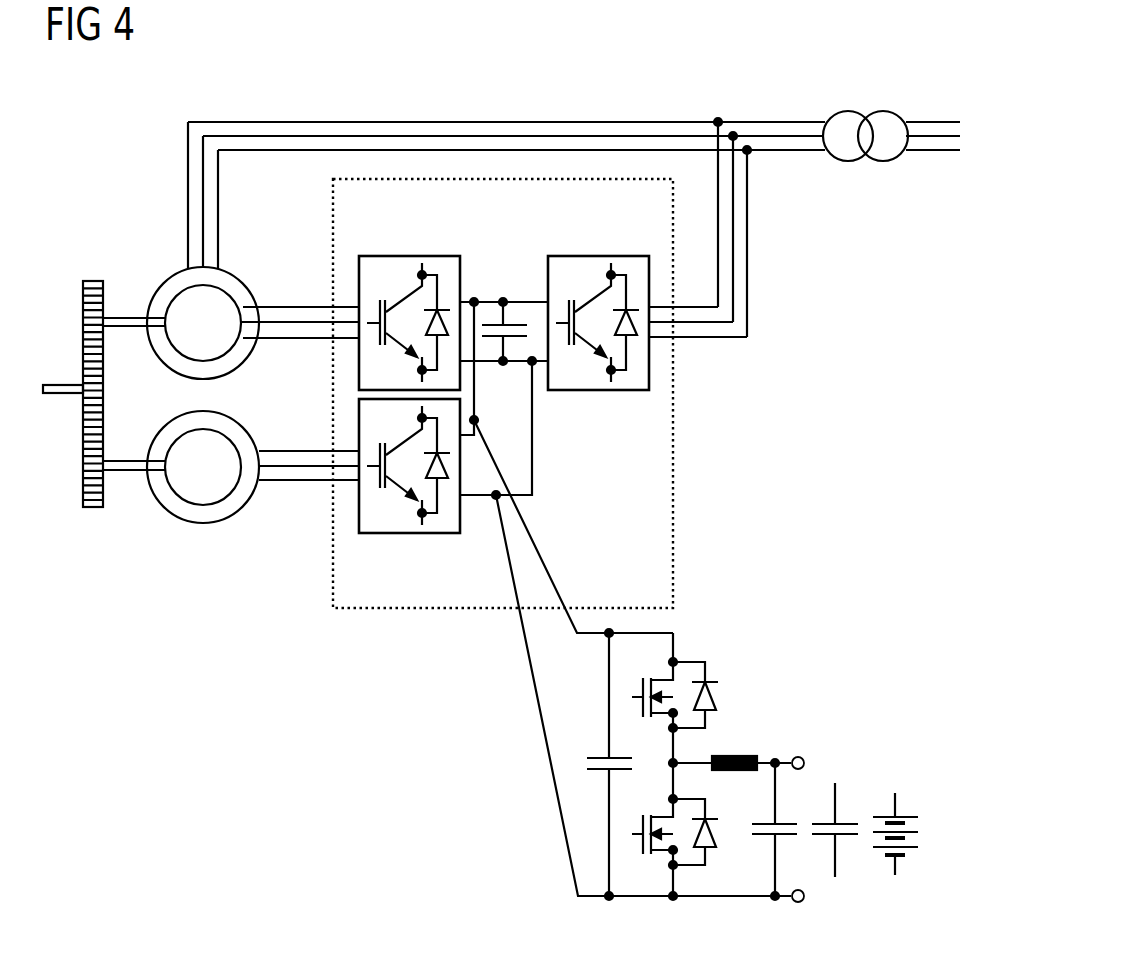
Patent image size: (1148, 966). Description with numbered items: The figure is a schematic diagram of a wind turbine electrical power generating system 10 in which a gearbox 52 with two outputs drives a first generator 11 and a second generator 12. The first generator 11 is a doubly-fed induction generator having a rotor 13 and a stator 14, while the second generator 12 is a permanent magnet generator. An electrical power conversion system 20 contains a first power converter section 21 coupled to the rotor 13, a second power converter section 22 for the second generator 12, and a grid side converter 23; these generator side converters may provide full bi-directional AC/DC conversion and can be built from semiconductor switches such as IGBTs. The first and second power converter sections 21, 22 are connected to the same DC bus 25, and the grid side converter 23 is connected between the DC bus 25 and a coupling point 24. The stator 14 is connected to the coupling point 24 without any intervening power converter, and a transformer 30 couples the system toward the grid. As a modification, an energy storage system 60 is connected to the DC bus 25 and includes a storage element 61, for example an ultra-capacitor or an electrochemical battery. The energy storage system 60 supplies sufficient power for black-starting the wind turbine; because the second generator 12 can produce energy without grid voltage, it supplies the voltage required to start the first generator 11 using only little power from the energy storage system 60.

The electrical power generating system 10 is at (520, 94).
The first generator 11 is at (231, 311).
The second generator 12 is at (203, 524).
The rotor 13 is at (230, 352).
The stator 14 is at (238, 272).
The electrical power conversion system 20 is at (673, 478).
The first power converter section 21 is at (408, 255).
The second power converter section 22 is at (410, 534).
The grid side converter 23 is at (596, 391).
The coupling point 24 is at (765, 112).
The DC bus 25 is at (527, 300).
The transformer 30 is at (845, 111).
The gearbox 52 is at (93, 508).
The energy storage system 60 is at (722, 897).
The storage element 61 is at (897, 866).